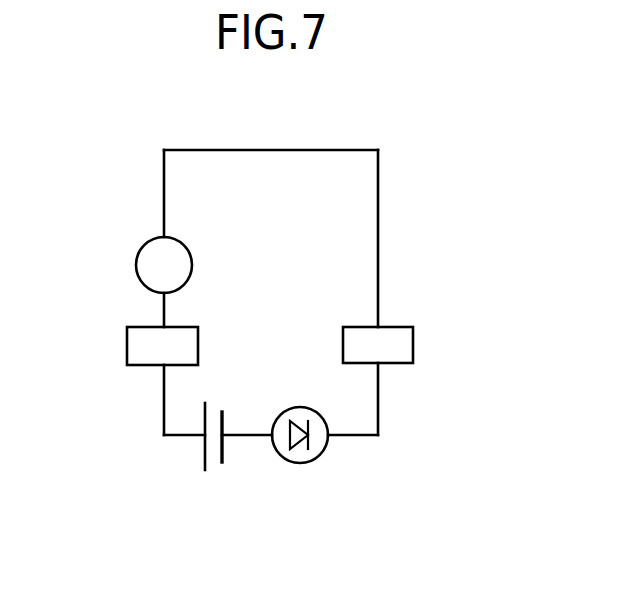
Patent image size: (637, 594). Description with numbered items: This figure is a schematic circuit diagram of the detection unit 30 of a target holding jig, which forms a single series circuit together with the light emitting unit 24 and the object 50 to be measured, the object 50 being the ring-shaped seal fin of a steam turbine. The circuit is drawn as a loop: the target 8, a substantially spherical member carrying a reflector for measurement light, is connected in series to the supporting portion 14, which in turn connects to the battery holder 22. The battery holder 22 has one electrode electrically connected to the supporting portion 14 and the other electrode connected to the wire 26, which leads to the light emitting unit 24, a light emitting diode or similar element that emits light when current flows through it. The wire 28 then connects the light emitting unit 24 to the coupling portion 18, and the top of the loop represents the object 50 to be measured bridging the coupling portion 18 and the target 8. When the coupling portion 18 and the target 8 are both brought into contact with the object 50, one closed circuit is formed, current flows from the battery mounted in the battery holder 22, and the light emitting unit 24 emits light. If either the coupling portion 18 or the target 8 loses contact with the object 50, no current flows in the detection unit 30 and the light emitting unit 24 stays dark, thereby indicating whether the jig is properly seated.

The object to be measured 50 is at (327, 150).
The detection unit 30 is at (138, 228).
The target 8 is at (136, 264).
The supporting portion 14 is at (127, 343).
The coupling portion 18 is at (413, 343).
The battery holder 22 is at (190, 465).
The wire 26 is at (245, 438).
The light emitting unit 24 is at (302, 464).
The wire 28 is at (378, 410).